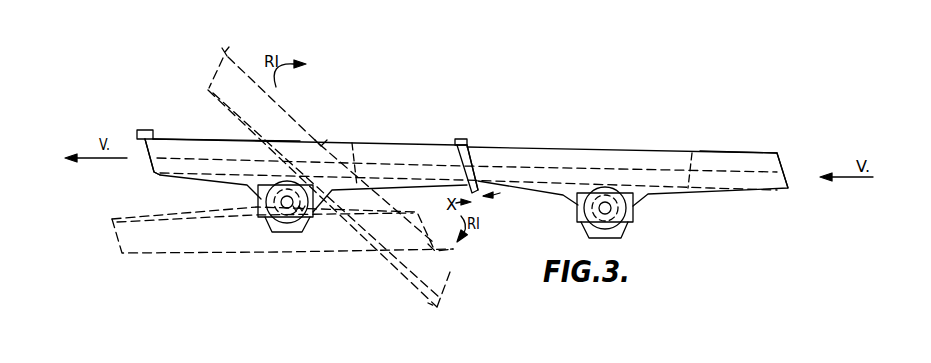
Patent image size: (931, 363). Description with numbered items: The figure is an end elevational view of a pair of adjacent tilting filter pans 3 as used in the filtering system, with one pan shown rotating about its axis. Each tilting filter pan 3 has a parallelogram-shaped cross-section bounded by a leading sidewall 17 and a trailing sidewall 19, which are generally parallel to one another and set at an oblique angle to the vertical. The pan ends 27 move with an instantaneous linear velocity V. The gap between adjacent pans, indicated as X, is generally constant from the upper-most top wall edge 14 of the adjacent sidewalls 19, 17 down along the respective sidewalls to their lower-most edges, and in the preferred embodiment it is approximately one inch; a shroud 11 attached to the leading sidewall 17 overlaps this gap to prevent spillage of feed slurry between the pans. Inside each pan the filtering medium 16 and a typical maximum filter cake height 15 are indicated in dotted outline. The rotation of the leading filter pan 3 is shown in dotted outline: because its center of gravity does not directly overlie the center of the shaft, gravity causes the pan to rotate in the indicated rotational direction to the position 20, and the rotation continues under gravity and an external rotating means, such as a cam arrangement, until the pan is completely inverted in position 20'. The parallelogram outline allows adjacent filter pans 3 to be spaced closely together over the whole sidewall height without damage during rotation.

The tilting filter pan 3 is at (433, 125).
The shroud 11 is at (142, 130).
The top wall edge 14 is at (214, 138).
The maximum filter cake height 15 is at (325, 142).
The filtering medium 16 is at (353, 143).
The leading sidewall 17 is at (154, 172).
The trailing sidewall 19 is at (781, 162).
The position of partial rotation 20 is at (313, 177).
The inverted position 20' is at (267, 230).
The pan end 27 is at (748, 162).